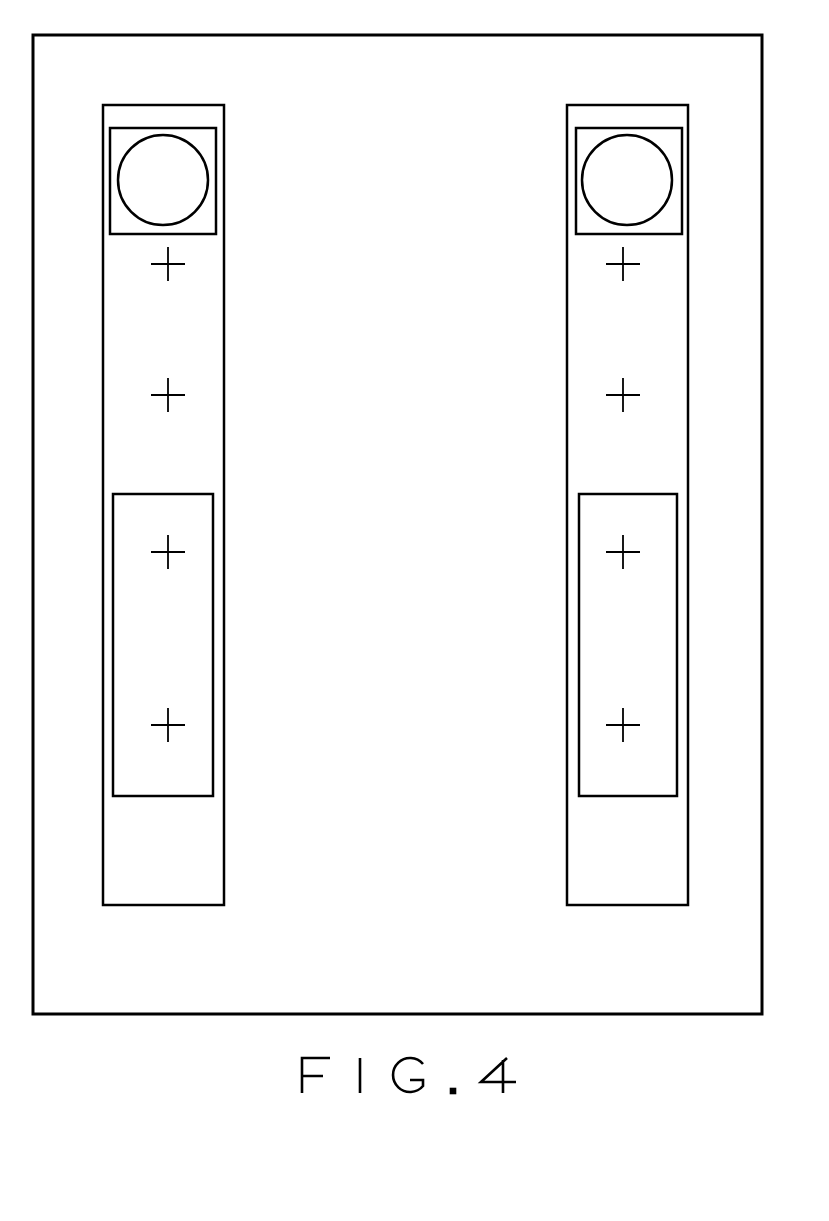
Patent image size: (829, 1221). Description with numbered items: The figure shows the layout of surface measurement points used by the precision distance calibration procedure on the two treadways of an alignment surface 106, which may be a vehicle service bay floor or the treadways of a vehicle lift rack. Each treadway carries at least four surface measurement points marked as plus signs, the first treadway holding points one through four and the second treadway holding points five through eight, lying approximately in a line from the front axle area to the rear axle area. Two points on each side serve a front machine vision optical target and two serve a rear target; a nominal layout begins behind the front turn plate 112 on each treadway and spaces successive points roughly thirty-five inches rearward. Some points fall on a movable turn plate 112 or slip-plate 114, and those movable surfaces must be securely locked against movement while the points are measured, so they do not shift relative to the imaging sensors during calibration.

The alignment surface 106 is at (257, 392).
The turn plate 112 is at (216, 158).
The slip-plate 114 is at (213, 650).